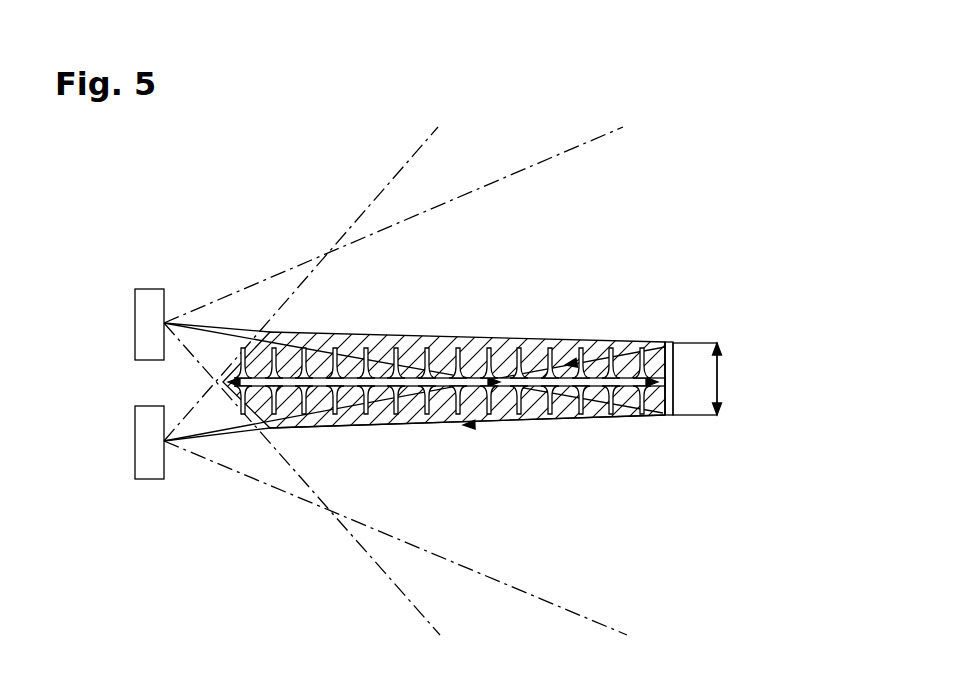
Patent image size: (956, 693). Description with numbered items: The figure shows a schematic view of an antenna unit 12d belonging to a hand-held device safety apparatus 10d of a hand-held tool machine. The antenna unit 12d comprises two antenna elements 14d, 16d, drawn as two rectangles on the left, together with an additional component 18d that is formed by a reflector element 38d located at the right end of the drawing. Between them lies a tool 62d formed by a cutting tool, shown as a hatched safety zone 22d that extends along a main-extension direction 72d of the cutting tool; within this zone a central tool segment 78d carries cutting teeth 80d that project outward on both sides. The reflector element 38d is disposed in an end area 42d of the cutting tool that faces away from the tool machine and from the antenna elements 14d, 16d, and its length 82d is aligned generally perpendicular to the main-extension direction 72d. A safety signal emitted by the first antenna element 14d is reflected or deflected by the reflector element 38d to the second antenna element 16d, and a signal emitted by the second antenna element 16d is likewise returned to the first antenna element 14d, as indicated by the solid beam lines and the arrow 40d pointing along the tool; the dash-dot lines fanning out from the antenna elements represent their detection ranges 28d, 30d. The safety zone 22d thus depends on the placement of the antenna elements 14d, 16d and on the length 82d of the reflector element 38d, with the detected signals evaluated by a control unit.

The hand-held device safety apparatus 10d is at (229, 222).
The antenna unit 12d is at (143, 262).
The first antenna element 14d is at (143, 322).
The second antenna element 16d is at (147, 468).
The additional component 18d is at (674, 420).
The safety zone 22d is at (478, 361).
The lower detection beam 28d is at (347, 490).
The upper detection beam 30d is at (375, 268).
The reflector element 38d is at (668, 343).
The direction arrow 40d is at (196, 383).
The end area 42d is at (660, 426).
The tool 62d is at (409, 416).
The main-extension direction 72d is at (445, 350).
The fin 78d is at (596, 410).
The housing wall 80d is at (518, 426).
The length 82d is at (718, 368).